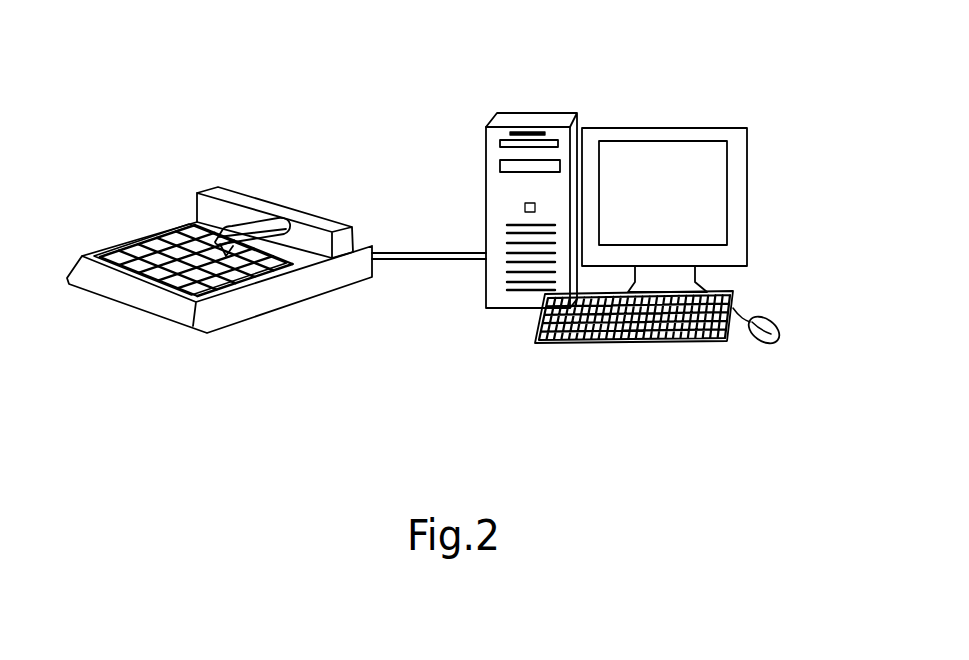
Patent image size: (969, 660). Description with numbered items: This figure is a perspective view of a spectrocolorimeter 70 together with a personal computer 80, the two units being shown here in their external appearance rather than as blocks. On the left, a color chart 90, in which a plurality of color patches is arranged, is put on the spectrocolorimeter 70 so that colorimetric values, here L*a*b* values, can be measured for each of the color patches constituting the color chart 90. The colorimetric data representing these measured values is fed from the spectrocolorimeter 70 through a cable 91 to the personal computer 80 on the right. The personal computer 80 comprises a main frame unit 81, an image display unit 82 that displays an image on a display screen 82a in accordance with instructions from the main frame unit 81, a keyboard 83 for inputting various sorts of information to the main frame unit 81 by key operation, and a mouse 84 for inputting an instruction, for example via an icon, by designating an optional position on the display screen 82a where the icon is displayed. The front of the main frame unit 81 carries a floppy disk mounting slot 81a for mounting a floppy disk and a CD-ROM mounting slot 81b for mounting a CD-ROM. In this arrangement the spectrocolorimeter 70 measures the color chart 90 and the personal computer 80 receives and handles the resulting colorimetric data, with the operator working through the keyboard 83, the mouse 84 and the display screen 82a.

The spectrocolorimeter 70 is at (163, 179).
The color chart 90 is at (104, 253).
The cable 91 is at (425, 252).
The personal computer 80 is at (742, 107).
The main frame unit 81 is at (540, 112).
The floppy disk mounting slot 81a is at (500, 142).
The CD-ROM mounting slot 81b is at (500, 165).
The image display unit 82 is at (662, 127).
The display screen 82a is at (727, 173).
The keyboard 83 is at (737, 293).
The mouse 84 is at (780, 328).